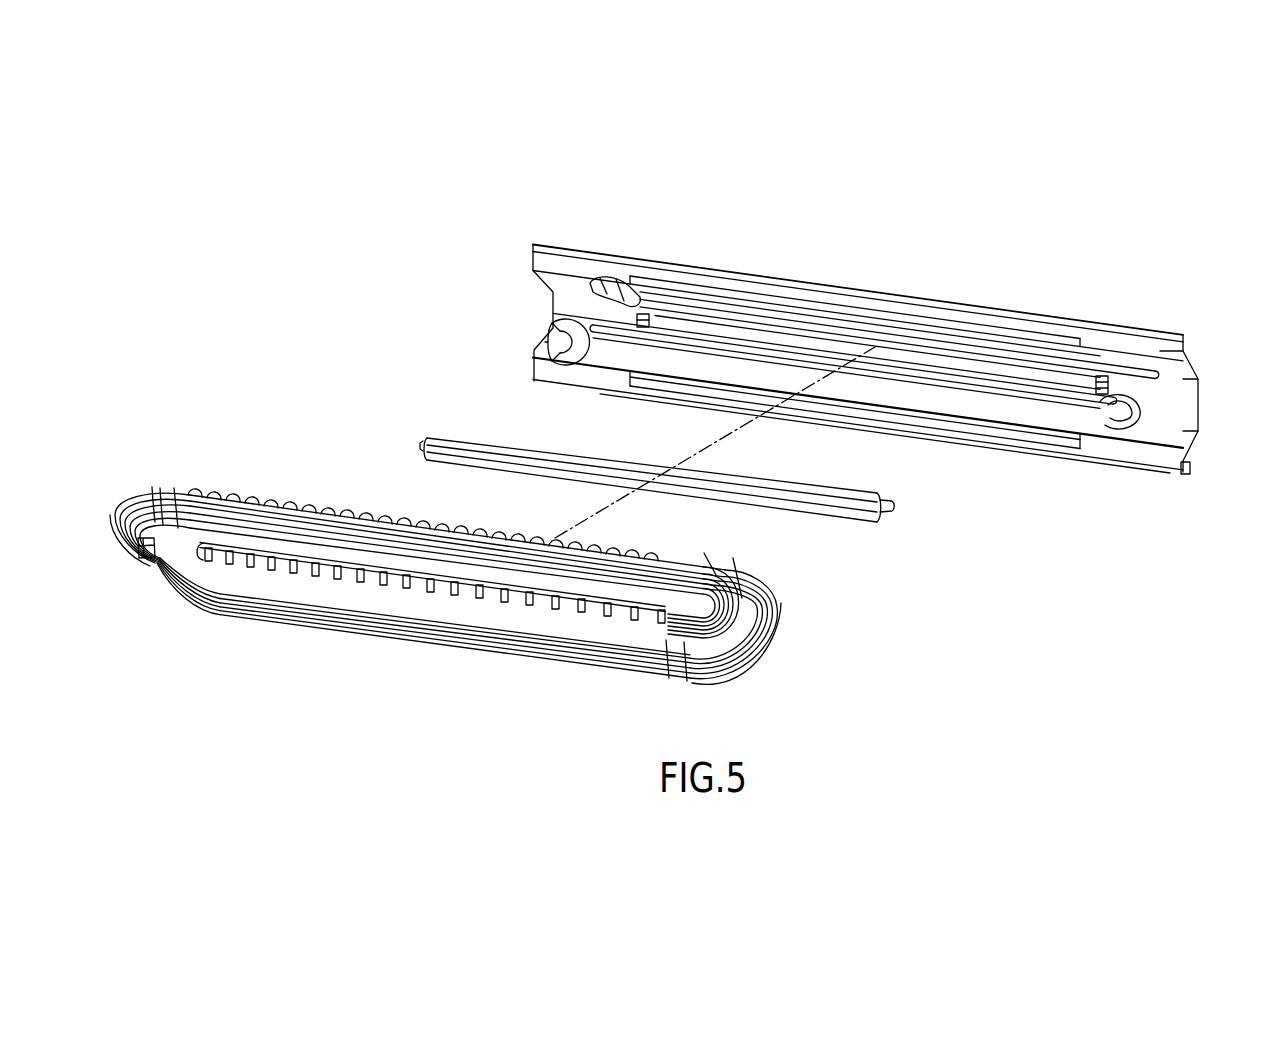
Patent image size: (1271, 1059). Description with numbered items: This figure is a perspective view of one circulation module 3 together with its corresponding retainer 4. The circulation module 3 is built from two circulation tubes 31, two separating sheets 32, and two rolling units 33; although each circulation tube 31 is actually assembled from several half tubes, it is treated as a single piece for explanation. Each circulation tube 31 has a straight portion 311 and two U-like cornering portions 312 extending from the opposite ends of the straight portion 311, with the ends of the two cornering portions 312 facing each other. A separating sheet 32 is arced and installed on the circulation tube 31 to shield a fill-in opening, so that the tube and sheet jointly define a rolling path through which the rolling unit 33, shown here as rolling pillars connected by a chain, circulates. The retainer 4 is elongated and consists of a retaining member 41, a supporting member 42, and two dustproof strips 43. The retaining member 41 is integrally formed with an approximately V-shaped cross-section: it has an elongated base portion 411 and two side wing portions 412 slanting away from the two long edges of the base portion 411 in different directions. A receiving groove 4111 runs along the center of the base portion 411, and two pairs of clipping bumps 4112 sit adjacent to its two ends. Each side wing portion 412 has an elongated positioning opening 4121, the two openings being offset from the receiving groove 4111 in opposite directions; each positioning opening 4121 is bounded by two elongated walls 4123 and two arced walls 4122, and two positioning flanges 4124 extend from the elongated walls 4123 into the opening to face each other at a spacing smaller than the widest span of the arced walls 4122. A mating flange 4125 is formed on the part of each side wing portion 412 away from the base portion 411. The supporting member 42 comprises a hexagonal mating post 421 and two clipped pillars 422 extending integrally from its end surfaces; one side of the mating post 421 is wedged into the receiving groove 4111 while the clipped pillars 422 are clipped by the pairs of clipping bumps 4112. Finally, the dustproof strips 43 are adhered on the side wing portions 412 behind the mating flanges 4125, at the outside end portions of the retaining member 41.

The circulation module 3 is at (300, 492).
The circulation tube 31 is at (292, 676).
The straight portion 311 is at (252, 504).
The cornering portion 312 is at (147, 567).
The separating sheet 32 is at (122, 498).
The rolling unit 33 is at (390, 512).
The retainer 4 is at (467, 280).
The retaining member 41 is at (552, 280).
The base portion 411 is at (1198, 389).
The side wing portion 412 is at (1186, 369).
The receiving groove 4111 is at (1012, 374).
The clipping bump 4112 is at (1096, 388).
The positioning opening 4121 is at (1163, 380).
The arced wall 4122 is at (605, 283).
The elongated wall 4123 is at (647, 313).
The positioning flange 4124 is at (617, 333).
The mating flange 4125 is at (928, 322).
The supporting member 42 is at (453, 438).
The mating post 421 is at (838, 507).
The clipped pillar 422 is at (895, 509).
The dustproof strip 43 is at (1187, 464).